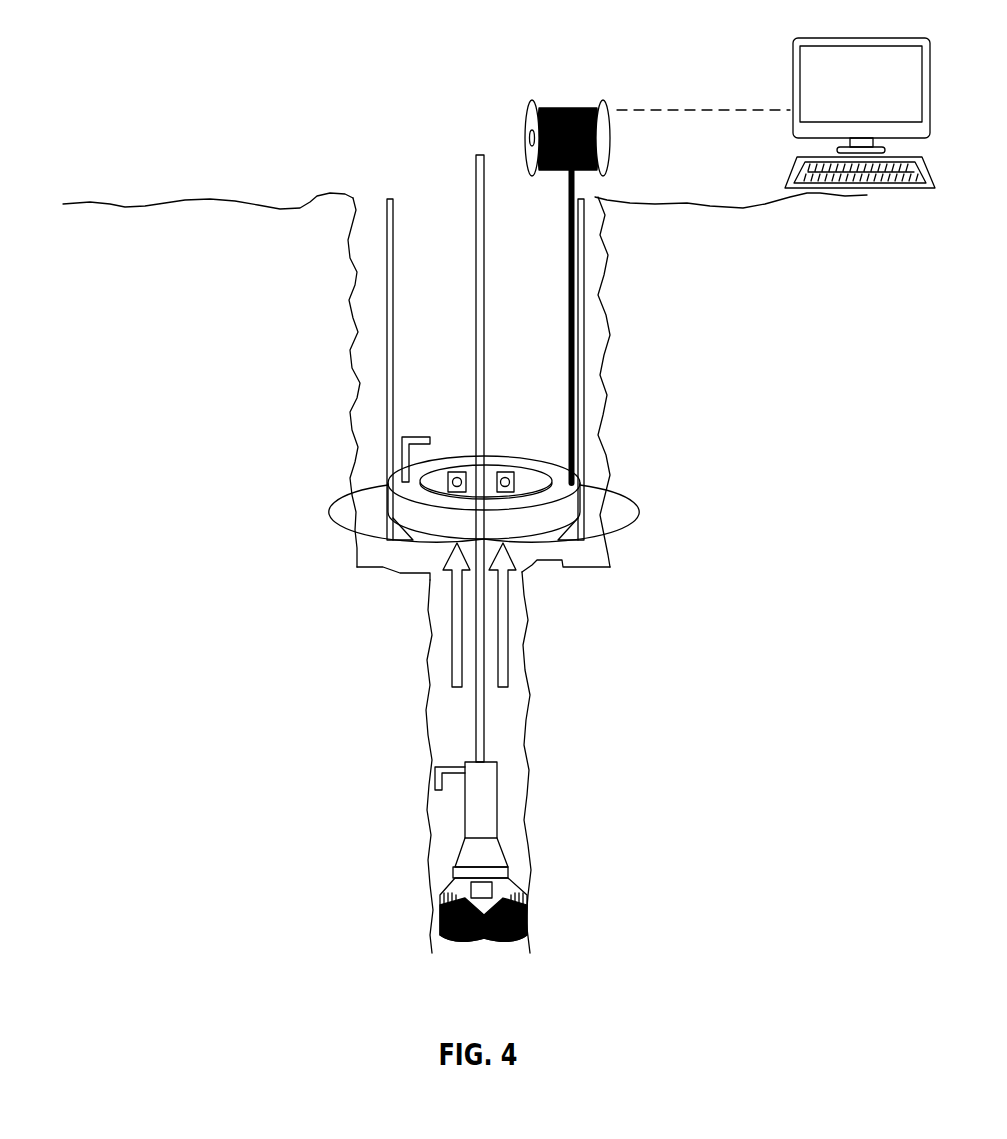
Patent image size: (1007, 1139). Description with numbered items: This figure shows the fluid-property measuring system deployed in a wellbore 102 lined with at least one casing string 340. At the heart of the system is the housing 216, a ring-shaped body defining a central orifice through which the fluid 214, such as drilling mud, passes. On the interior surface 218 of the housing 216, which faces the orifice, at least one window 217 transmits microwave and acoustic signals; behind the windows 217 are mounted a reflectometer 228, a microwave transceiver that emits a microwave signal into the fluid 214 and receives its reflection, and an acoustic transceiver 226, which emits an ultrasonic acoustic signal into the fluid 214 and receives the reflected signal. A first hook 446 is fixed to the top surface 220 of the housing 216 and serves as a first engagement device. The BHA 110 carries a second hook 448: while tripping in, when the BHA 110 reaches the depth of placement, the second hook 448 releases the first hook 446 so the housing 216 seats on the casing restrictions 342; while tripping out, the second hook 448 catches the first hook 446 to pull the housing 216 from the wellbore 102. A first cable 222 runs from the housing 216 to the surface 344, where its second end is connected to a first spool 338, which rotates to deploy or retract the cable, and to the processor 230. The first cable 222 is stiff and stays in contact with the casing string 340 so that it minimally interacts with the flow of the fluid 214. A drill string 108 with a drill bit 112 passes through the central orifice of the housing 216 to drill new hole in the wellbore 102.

The wellbore 102 is at (522, 700).
The drill string 108 is at (487, 750).
The BHA 110 is at (462, 823).
The drill bit 112 is at (527, 903).
The fluid 214 is at (453, 655).
The housing 216 is at (541, 412).
The window 217 is at (505, 470).
The interior surface 218 is at (427, 478).
The top surface 220 is at (548, 470).
The first cable 222 is at (575, 320).
The acoustic transceiver 226 is at (423, 481).
The reflectometer 228 is at (573, 512).
The processor 230 is at (842, 97).
The first spool 338 is at (583, 108).
The casing string 340 is at (383, 300).
The casing restrictions 342 is at (385, 567).
The surface 344 is at (108, 203).
The first hook 446 is at (402, 437).
The second hook 448 is at (433, 777).